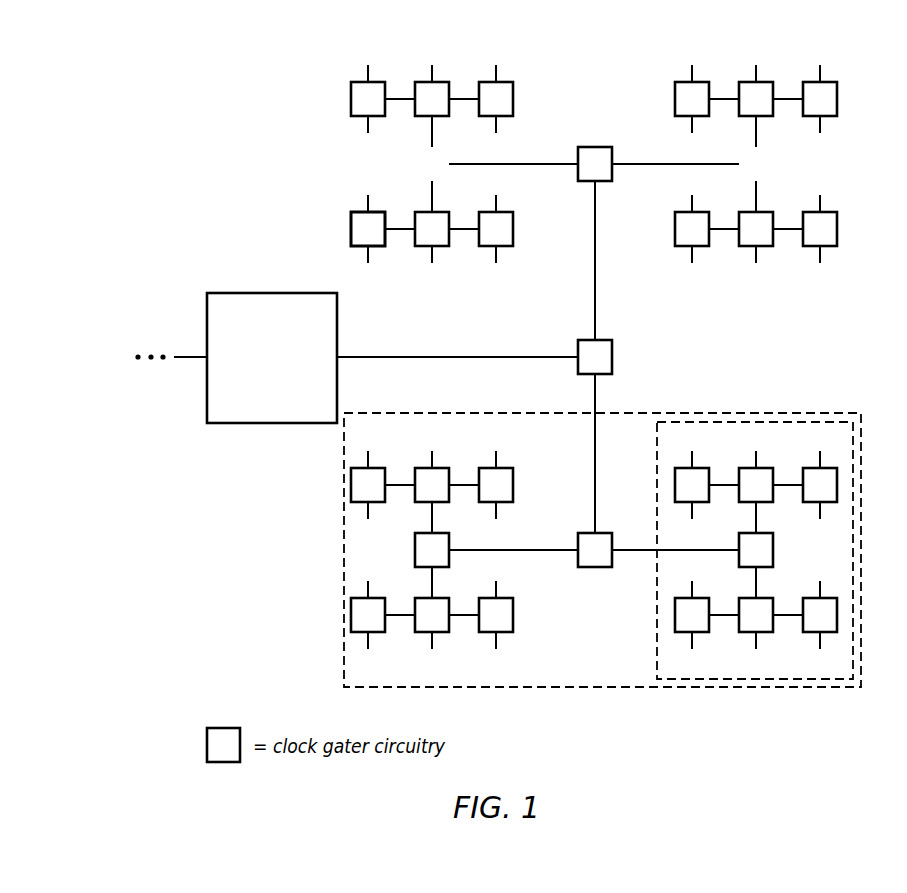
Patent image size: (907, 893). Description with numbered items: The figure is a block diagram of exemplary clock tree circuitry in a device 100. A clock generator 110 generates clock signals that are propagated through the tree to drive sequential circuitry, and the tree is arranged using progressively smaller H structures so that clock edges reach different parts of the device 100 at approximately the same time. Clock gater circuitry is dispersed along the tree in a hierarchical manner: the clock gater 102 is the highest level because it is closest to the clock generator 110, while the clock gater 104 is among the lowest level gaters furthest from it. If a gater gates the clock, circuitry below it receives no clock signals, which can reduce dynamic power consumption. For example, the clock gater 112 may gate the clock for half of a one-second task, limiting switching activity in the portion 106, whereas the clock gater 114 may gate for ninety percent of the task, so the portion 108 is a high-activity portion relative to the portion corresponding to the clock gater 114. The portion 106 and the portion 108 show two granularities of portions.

The device 100 is at (244, 113).
The clock gater 102 is at (613, 343).
The clock gater 104 is at (352, 223).
The portion 106 is at (740, 422).
The portion 108 is at (833, 413).
The clock generator 110 is at (272, 358).
The clock gater 112 is at (773, 556).
The clock gater 114 is at (416, 558).